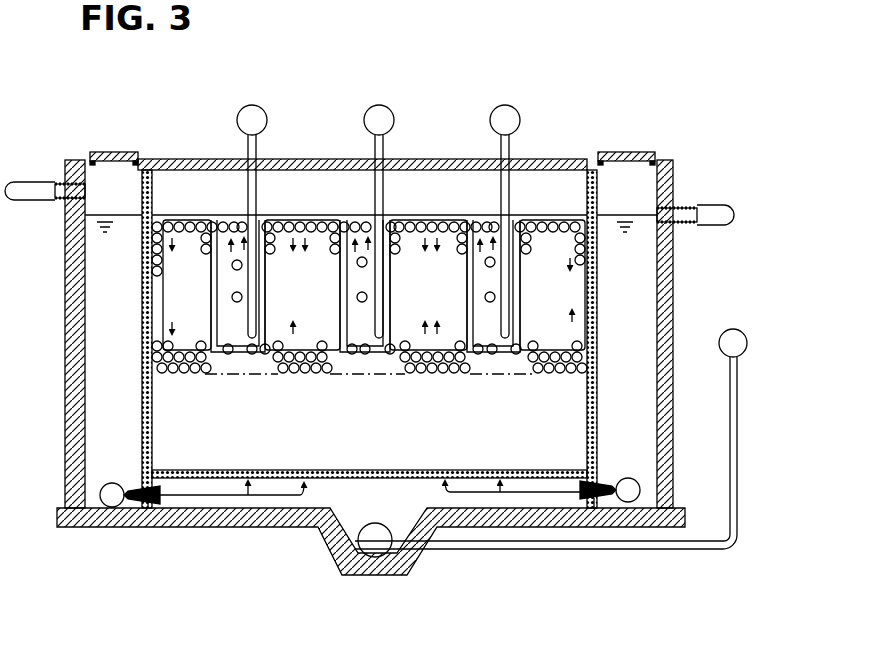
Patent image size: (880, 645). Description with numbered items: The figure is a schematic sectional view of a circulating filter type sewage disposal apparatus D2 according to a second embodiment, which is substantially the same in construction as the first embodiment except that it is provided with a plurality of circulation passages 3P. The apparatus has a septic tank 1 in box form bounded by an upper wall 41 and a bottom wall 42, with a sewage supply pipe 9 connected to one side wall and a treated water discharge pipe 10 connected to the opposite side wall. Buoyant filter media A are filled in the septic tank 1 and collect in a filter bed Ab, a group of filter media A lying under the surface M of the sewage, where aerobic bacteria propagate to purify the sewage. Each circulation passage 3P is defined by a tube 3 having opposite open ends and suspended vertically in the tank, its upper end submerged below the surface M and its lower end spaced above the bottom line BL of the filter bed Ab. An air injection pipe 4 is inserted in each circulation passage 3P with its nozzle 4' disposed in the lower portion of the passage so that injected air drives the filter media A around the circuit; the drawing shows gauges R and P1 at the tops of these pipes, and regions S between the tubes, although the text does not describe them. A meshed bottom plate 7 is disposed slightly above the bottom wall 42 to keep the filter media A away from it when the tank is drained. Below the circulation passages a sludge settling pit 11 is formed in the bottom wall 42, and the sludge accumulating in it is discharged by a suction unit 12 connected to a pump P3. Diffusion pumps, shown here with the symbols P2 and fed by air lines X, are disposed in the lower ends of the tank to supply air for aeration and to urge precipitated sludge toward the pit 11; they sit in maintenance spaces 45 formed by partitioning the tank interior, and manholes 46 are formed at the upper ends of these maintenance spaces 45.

The septic tank 1 is at (577, 160).
The tube 3 is at (211, 296).
The circulation passage 3P is at (270, 296).
The air injection pipe 4 is at (373, 236).
The nozzle 4' is at (369, 326).
The meshed bottom plate 7 is at (437, 470).
The sewage supply pipe 9 is at (25, 193).
The treated water discharge pipe 10 is at (717, 226).
The sludge settling pit 11 is at (338, 548).
The suction unit 12 is at (376, 552).
The upper wall 41 is at (310, 159).
The bottom wall 42 is at (252, 510).
The maintenance space 45 is at (126, 365).
The manhole 46 is at (128, 152).
The solution space S is at (210, 265).
The filter media A is at (168, 378).
The filter bed Ab is at (272, 378).
The bottom line of the filter bed BL is at (400, 382).
The surface of the sewage M is at (485, 214).
The air supply pipe X is at (187, 497).
The circulating filter type sewage disposal apparatus D2 is at (536, 76).
The reference gauge R is at (252, 221).
The pressure gauge P1 is at (442, 221).
The pressure valve P2 is at (370, 493).
The pump P3 is at (733, 343).